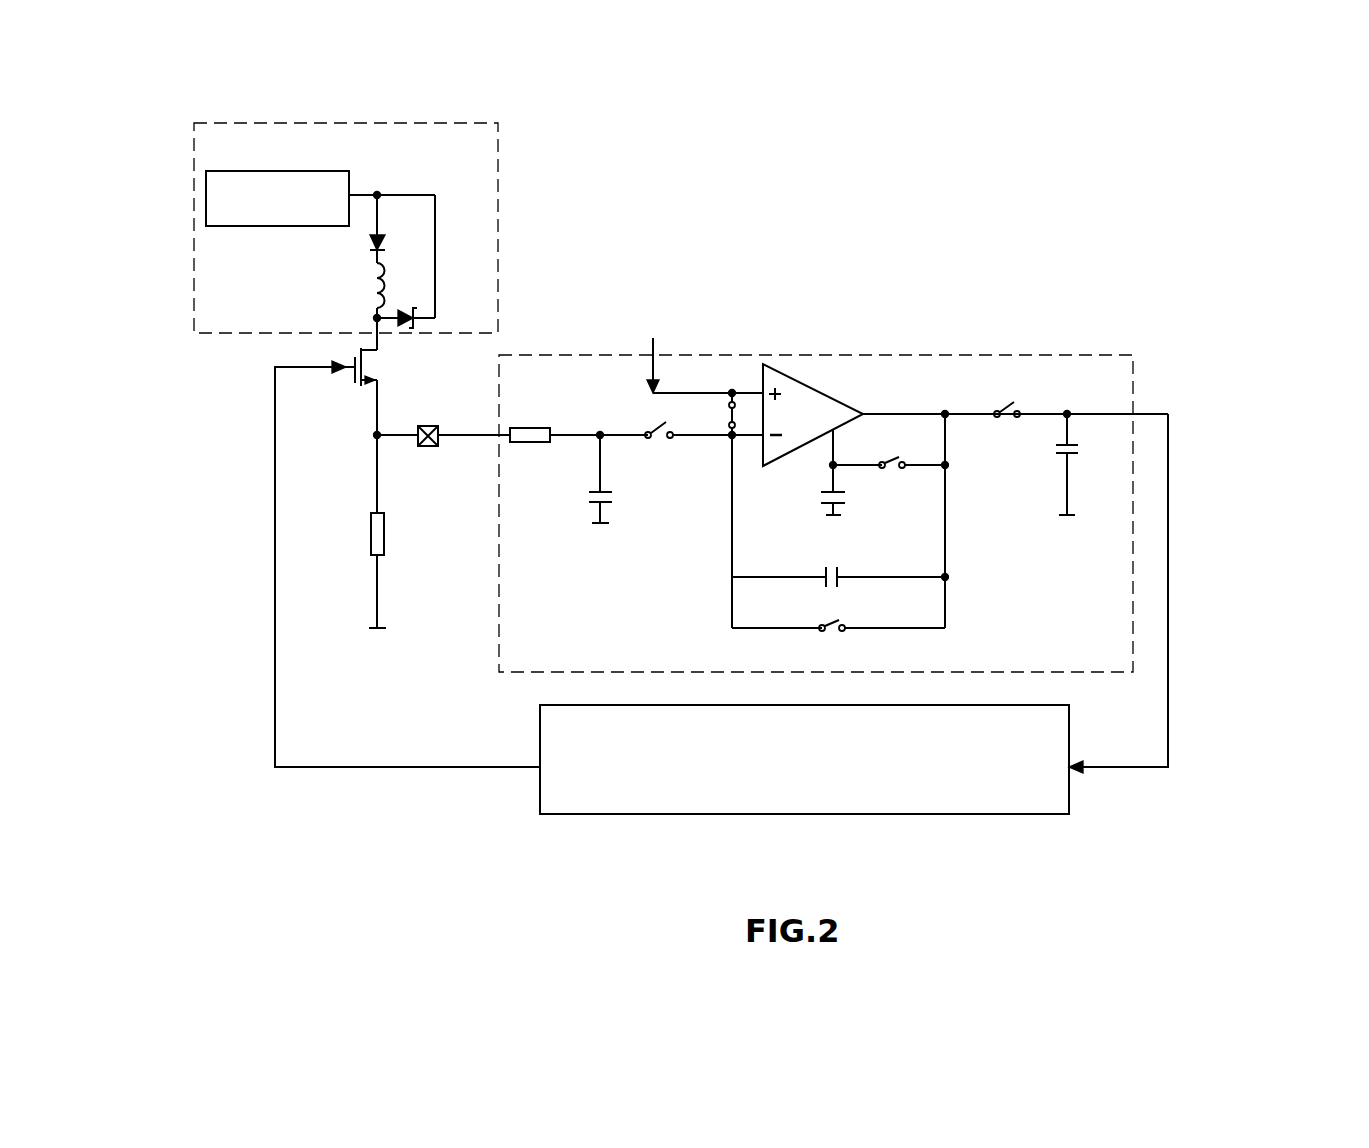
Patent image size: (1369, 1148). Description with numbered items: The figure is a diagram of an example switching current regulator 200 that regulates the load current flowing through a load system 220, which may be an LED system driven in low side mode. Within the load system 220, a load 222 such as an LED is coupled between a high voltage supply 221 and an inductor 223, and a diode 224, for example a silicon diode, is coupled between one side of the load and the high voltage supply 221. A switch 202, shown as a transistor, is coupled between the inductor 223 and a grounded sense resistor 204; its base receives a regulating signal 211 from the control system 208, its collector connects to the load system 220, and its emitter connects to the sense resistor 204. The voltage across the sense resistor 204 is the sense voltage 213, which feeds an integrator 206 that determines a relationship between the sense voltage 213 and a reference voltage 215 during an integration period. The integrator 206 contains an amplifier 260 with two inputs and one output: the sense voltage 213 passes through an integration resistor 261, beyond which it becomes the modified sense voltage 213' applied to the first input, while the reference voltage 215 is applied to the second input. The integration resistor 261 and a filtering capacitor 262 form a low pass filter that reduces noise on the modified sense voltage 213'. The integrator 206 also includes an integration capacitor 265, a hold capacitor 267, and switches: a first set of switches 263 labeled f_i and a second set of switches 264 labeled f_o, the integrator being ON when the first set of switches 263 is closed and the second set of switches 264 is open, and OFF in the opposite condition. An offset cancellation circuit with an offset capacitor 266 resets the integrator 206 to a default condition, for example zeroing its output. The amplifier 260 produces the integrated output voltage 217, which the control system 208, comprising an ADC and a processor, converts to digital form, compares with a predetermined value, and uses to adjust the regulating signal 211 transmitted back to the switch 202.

The switching current regulator 200 is at (147, 130).
The switch 202 is at (356, 378).
The sense resistor 204 is at (369, 540).
The integrator 206 is at (967, 353).
The control system 208 is at (588, 818).
The regulating signal 211 is at (340, 561).
The sense voltage 213 is at (443, 492).
The modified sense voltage 213' is at (621, 451).
The reference voltage 215 is at (678, 340).
The integrated output voltage 217 is at (1198, 579).
The load system 220 is at (501, 175).
The high voltage supply 221 is at (318, 168).
The load 222 is at (370, 241).
The inductor 223 is at (376, 285).
The diode 224 is at (421, 305).
The amplifier 260 is at (824, 389).
The integration resistor 261 is at (537, 428).
The filtering capacitor 262 is at (598, 504).
The first set of switches 263 is at (657, 423).
The second set of switches 264 is at (820, 632).
The integration capacitor 265 is at (823, 573).
The offset capacitor 266 is at (823, 504).
The hold capacitor 267 is at (1059, 458).